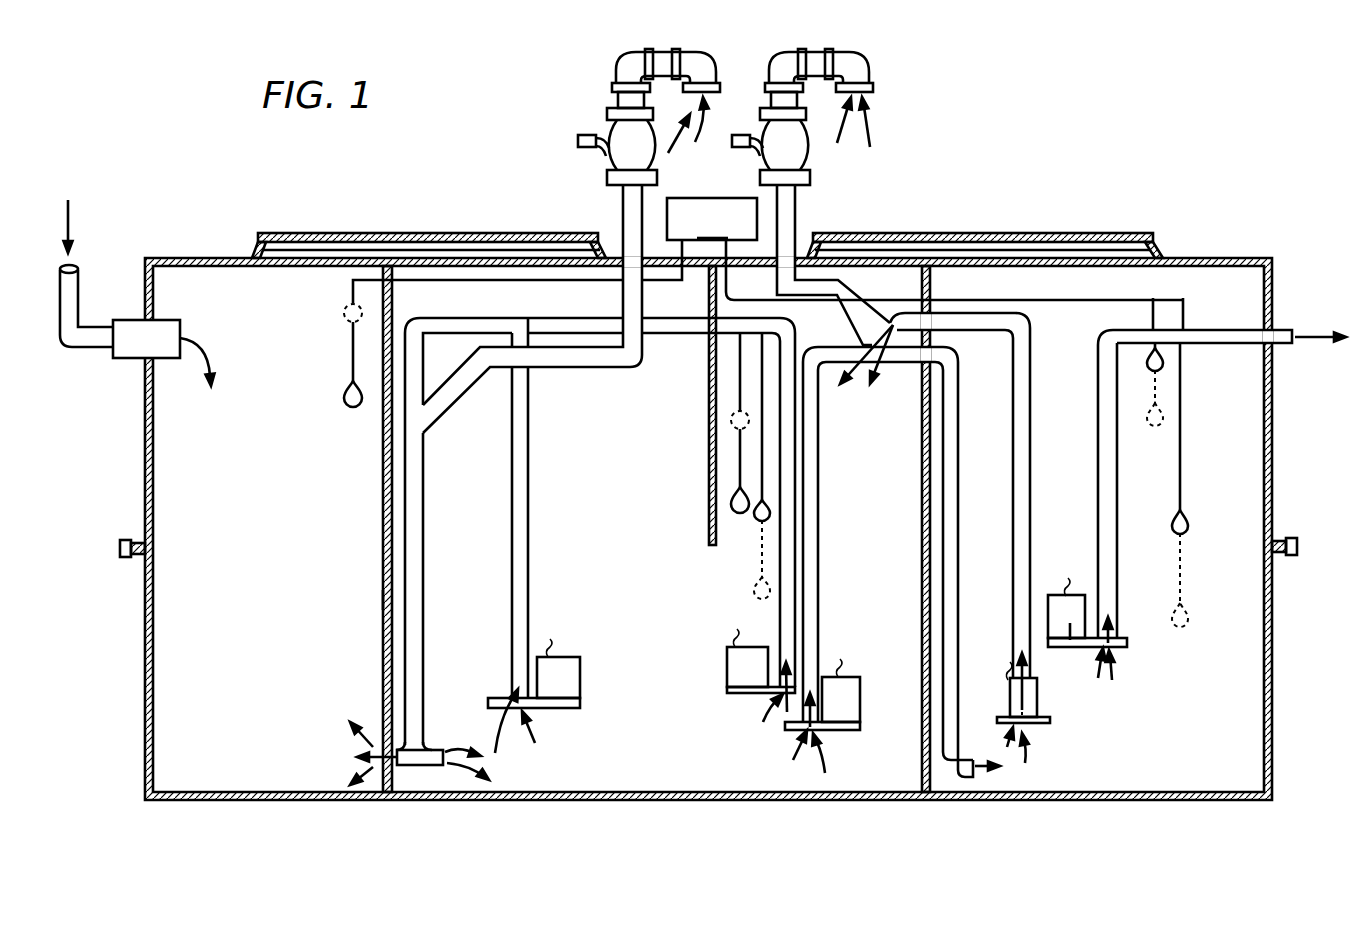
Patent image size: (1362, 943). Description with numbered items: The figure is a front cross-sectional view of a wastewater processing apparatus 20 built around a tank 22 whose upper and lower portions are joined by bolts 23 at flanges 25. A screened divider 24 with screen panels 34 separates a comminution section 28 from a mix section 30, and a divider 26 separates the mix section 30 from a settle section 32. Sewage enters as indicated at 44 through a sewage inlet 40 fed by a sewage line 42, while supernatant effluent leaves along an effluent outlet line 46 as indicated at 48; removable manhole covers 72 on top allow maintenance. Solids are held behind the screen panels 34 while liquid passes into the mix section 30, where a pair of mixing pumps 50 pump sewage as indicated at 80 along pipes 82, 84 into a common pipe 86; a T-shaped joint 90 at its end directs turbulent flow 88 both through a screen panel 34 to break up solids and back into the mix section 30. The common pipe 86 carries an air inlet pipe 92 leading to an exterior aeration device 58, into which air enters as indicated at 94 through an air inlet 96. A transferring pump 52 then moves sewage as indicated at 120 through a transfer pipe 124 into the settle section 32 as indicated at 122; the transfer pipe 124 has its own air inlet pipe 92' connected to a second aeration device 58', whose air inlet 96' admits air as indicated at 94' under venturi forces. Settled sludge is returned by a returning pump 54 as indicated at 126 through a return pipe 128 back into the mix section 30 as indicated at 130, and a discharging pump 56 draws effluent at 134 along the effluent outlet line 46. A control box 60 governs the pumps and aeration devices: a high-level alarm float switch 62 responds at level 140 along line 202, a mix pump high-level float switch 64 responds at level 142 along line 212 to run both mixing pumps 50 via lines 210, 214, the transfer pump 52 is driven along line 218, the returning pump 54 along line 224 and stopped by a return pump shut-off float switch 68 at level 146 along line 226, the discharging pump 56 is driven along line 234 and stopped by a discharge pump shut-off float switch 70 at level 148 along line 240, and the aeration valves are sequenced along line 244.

The wastewater processing apparatus 20 is at (421, 229).
The tank 22 is at (145, 650).
The bolts 23 is at (128, 540).
The screened divider 24 is at (383, 600).
The flanges 25 is at (122, 552).
The divider 26 is at (922, 580).
The comminution section 28 is at (283, 546).
The mix section 30 is at (638, 583).
The settle section 32 is at (1192, 724).
The screen panels 34 is at (383, 455).
The sewage inlet 40 is at (122, 358).
The sewage line 42 is at (73, 305).
The incoming sewage flow 44 is at (80, 247).
The effluent outlet line 46 is at (1117, 478).
The outgoing effluent flow 48 is at (1296, 332).
The mixing pumps 50 is at (575, 678).
The transferring pump 52 is at (860, 700).
The returning pump 54 is at (1037, 695).
The discharging pump 56 is at (1075, 648).
The aeration device 58 is at (610, 109).
The aeration device 58' is at (783, 105).
The control box 60 is at (712, 219).
The high-level alarm float switch 62 is at (343, 397).
The mix pump high-level float switch 64 is at (742, 515).
The return pump shut-off float switch 68 is at (1155, 358).
The discharge pump shut-off float switch 70 is at (1189, 520).
The removable manhole covers 72 is at (468, 232).
The pumped sewage flow 80 is at (505, 745).
The pipe 82 is at (777, 620).
The pipe 84 is at (529, 585).
The common pipe 86 is at (424, 522).
The turbulent flow 88 is at (320, 750).
The T-shaped joint 90 is at (424, 766).
The air inlet pipe 92 is at (532, 309).
The air inlet pipe 92' is at (833, 265).
The air entry flow 94 is at (688, 145).
The air entry flow 94' is at (887, 119).
The air inlet 96 is at (674, 58).
The air inlet 96' is at (850, 64).
The transfer flow from mix section 120 is at (830, 765).
The transfer flow into settle section 122 is at (1000, 777).
The transfer pipe 124 is at (818, 508).
The sludge return flow 126 is at (1030, 752).
The return pipe 128 is at (1030, 508).
The returned sludge flow 130 is at (878, 388).
The effluent removal flow 134 is at (1112, 665).
The predetermined level 140 is at (343, 314).
The predetermined level 142 is at (732, 420).
The predetermined level 146 is at (1140, 415).
The predetermined level 148 is at (1190, 615).
The line 202 is at (352, 345).
The line 210 is at (552, 650).
The line 212 is at (740, 370).
The line 214 is at (735, 650).
The line 218 is at (838, 676).
The line 224 is at (1008, 680).
The line 226 is at (1152, 315).
The line 234 is at (1066, 596).
The line 240 is at (1182, 478).
The line 244 is at (576, 140).